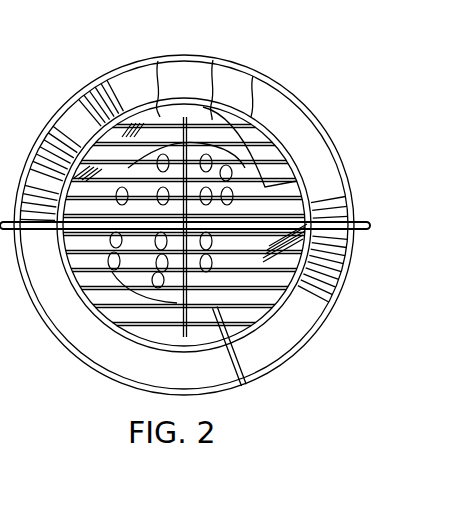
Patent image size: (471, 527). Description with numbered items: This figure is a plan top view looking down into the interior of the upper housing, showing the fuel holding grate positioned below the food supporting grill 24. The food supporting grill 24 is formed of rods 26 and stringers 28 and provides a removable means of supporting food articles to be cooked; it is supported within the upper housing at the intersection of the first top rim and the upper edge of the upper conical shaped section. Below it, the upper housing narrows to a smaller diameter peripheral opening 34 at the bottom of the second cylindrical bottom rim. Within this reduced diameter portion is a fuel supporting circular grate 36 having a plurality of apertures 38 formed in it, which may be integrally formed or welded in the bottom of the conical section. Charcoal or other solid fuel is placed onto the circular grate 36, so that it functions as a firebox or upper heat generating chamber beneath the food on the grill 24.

The food supporting grill 24 is at (163, 118).
The rods 26 is at (213, 60).
The stringers 28 is at (253, 78).
The smaller diameter peripheral opening 34 is at (322, 192).
The fuel supporting circular grate 36 is at (120, 285).
The apertures 38 is at (248, 310).